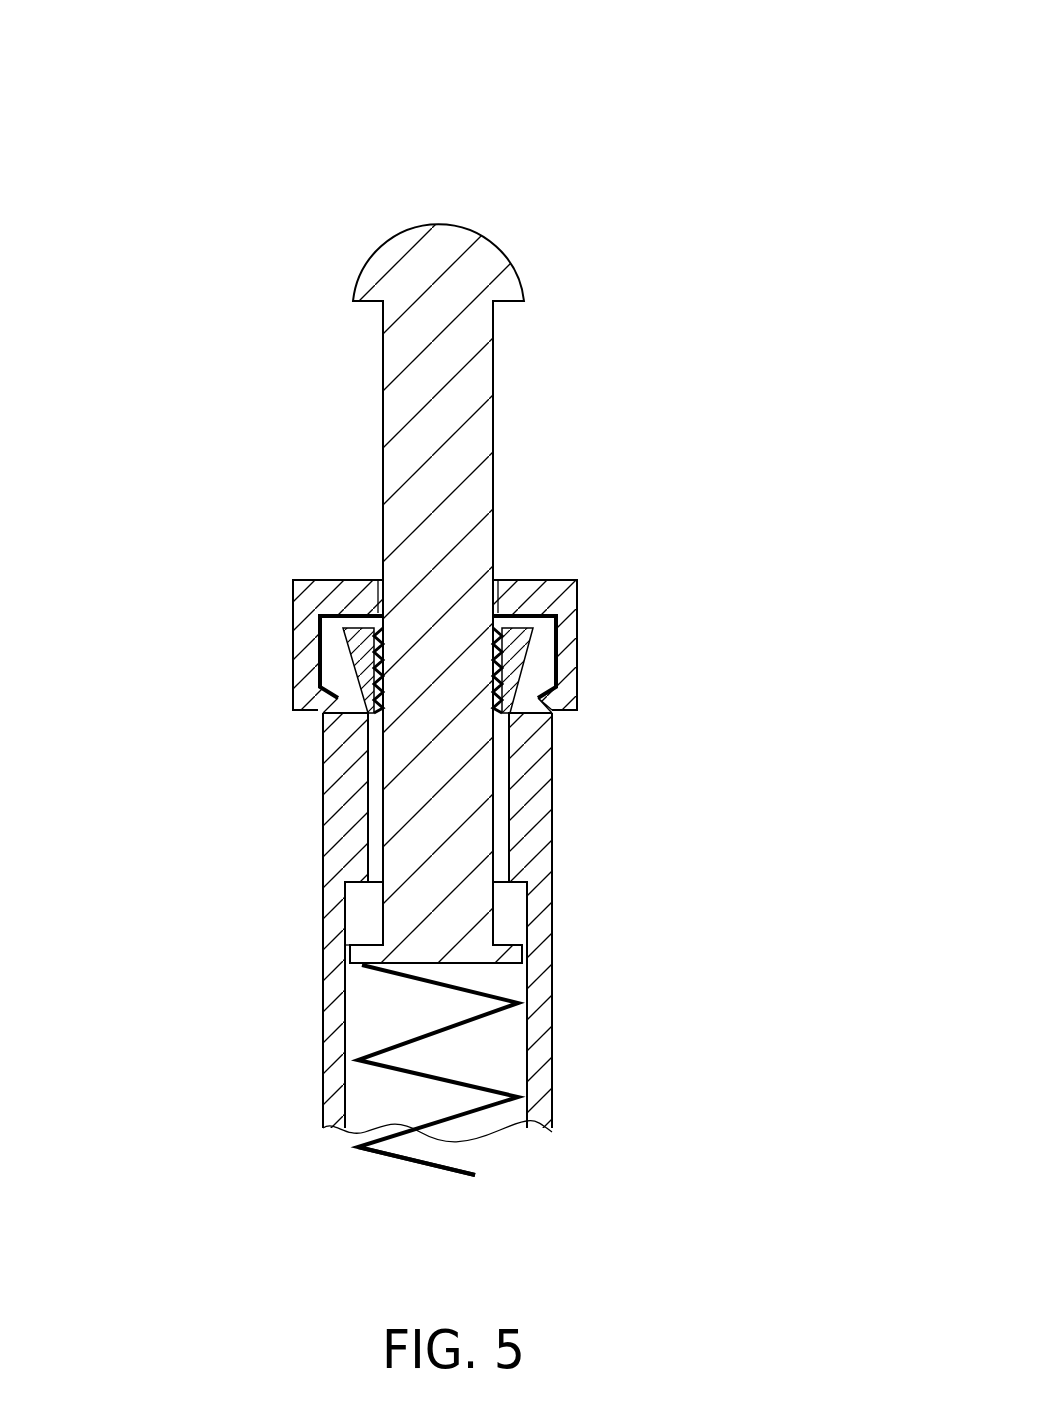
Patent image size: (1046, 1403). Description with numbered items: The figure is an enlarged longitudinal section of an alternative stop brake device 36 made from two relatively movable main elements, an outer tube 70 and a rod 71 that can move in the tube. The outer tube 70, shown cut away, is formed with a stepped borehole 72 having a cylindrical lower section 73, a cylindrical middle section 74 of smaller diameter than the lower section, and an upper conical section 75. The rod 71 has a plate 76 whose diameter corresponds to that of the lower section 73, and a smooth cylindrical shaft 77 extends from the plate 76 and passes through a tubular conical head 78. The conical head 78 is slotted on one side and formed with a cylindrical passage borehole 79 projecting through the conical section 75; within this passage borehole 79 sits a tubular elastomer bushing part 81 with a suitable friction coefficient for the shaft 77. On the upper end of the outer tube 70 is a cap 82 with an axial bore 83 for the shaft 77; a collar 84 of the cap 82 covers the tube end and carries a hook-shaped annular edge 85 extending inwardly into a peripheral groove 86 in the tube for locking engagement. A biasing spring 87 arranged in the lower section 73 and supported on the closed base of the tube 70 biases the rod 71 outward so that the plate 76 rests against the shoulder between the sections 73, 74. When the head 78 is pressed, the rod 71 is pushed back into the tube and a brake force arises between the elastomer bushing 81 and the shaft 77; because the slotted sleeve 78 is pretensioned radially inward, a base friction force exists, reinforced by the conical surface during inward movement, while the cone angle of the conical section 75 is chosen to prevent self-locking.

The stop brake device 36 is at (473, 133).
The outer tube 70 is at (585, 860).
The rod 71 is at (558, 433).
The stepped borehole 72 is at (397, 1012).
The lower section 73 is at (502, 1052).
The middle section 74 is at (505, 807).
The upper conical section 75 is at (535, 650).
The plate 76 is at (512, 956).
The smooth cylindrical shaft 77 is at (494, 496).
The tubular conical head 78 is at (497, 246).
The cylindrical passage borehole 79 is at (585, 588).
The tubular elastomer bushing part 81 is at (367, 667).
The cap 82 is at (293, 578).
The axial bore 83 is at (503, 575).
The collar 84 is at (293, 650).
The hook-shaped annular edge 85 is at (578, 684).
The peripheral groove 86 is at (554, 733).
The biasing spring 87 is at (438, 1168).